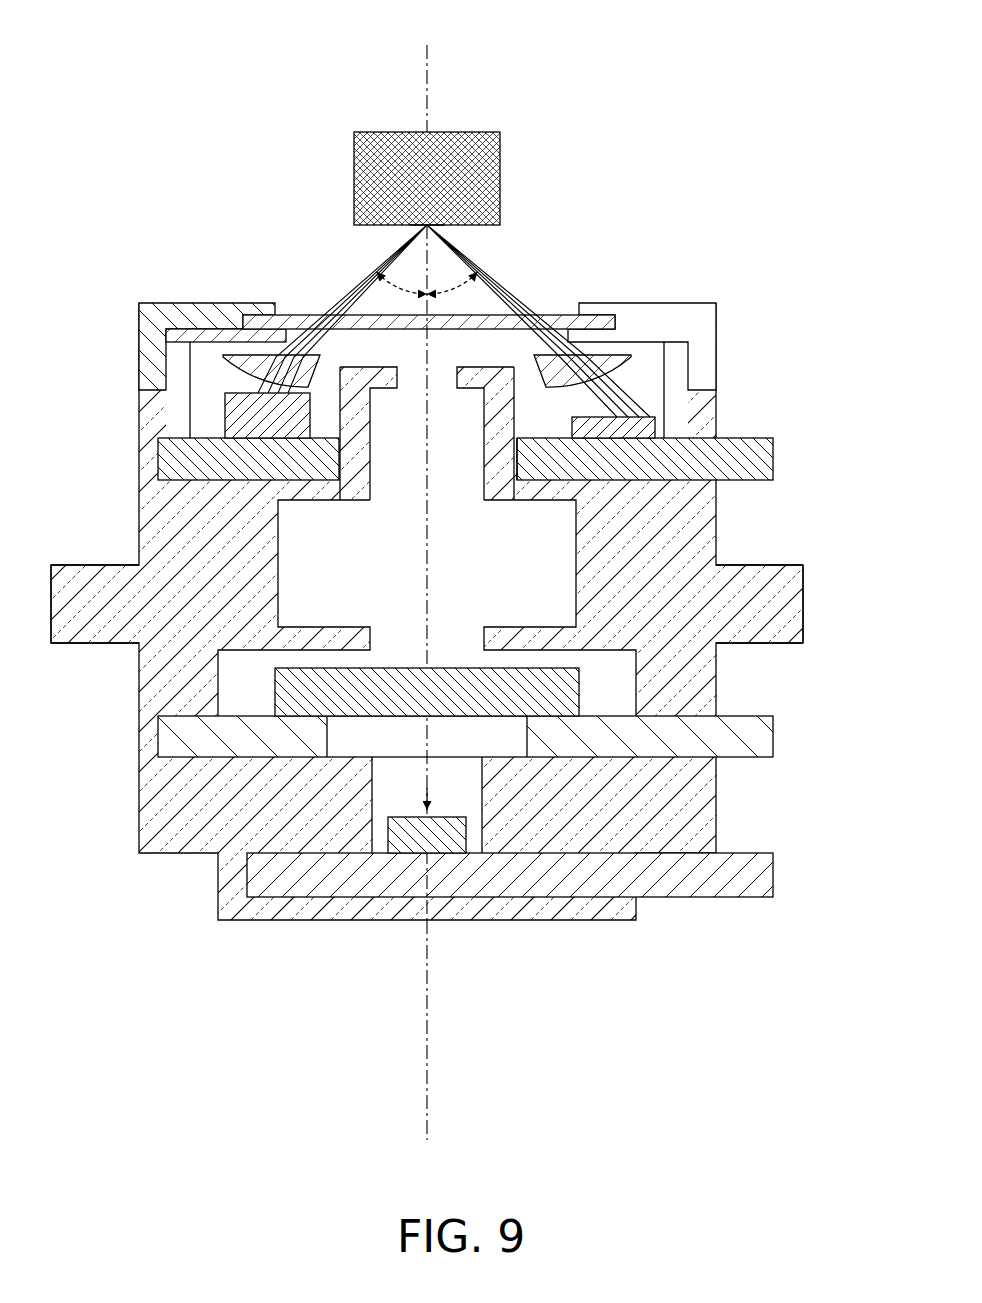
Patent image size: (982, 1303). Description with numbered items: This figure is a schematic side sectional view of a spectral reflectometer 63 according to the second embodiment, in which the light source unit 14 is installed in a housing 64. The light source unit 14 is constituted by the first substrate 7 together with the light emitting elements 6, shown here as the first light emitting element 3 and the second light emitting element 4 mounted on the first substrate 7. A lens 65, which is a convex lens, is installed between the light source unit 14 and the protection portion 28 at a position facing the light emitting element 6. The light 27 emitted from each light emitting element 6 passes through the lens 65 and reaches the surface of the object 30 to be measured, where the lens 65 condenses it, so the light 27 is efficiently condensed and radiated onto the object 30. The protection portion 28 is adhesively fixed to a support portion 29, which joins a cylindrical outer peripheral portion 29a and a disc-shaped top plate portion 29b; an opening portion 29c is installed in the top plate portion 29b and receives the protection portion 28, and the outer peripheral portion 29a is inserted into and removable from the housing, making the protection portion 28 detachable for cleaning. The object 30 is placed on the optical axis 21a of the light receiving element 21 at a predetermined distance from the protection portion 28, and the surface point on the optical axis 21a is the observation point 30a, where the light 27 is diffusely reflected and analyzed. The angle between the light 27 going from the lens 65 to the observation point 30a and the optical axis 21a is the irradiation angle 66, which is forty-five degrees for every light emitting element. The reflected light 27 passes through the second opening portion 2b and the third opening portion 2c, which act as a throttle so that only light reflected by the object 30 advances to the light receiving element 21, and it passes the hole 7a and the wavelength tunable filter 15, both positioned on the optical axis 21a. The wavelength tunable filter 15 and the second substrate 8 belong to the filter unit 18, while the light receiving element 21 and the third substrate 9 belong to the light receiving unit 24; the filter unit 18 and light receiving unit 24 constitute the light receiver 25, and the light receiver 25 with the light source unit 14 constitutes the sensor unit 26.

The spectral reflectometer 63 is at (491, 576).
The object to be measured 30 is at (354, 181).
The observation point 30a is at (423, 228).
The protection portion 28 is at (303, 314).
The light 27 is at (492, 270).
The support portion 29 is at (500, 340).
The outer peripheral portion 29a is at (710, 332).
The top plate portion 29b is at (640, 316).
The opening portion 29c is at (568, 312).
The lens 65 is at (240, 372).
The irradiation angle 66 is at (429, 294).
The first light emitting element 3 is at (643, 428).
The second light emitting element 4 is at (226, 420).
The light emitting element 6 is at (427, 417).
The first substrate 7 is at (492, 470).
The light source unit 14 is at (766, 452).
The sensor unit 26 is at (500, 674).
The hole 7a is at (517, 463).
The second opening portion 2b is at (399, 376).
The third opening portion 2c is at (372, 640).
The housing 64 is at (790, 606).
The second substrate 8 is at (500, 749).
The filter unit 18 is at (766, 745).
The light receiver 25 is at (500, 813).
The wavelength tunable filter 15 is at (462, 700).
The light receiving element 21 is at (398, 816).
The third substrate 9 is at (547, 882).
The light receiving unit 24 is at (766, 878).
The optical axis 21a is at (432, 985).